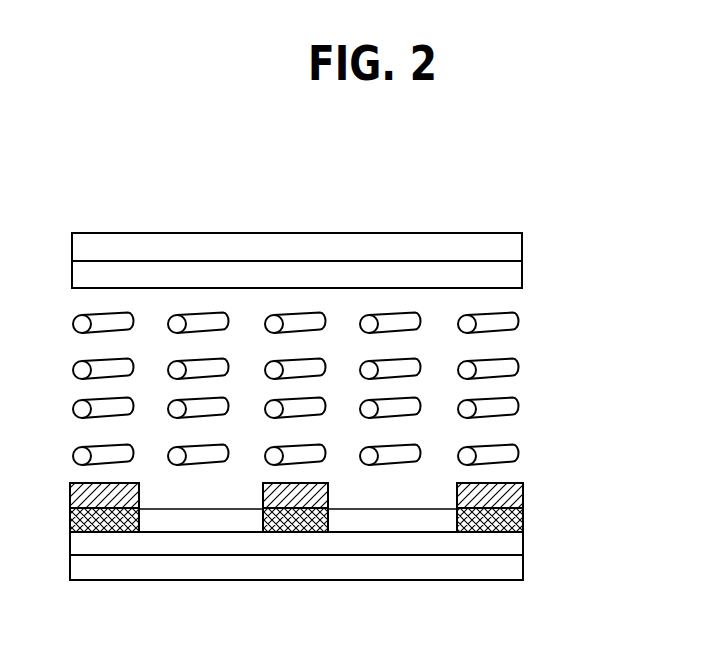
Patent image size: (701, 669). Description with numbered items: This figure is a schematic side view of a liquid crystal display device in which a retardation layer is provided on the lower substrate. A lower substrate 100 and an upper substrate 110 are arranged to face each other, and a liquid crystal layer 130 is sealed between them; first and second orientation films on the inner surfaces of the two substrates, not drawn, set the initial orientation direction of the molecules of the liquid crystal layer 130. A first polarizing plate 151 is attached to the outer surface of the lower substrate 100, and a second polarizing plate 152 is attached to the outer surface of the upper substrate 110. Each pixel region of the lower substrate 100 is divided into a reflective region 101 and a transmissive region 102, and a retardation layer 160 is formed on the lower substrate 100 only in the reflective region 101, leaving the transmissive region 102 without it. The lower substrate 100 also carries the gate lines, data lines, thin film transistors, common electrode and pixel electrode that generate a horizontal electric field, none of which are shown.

The second polarizing plate 152 is at (522, 246).
The upper substrate 110 is at (522, 275).
The liquid crystal layer 130 is at (512, 385).
The retardation layer 160 is at (517, 494).
The reflective region 101 is at (517, 521).
The transmissive region 102 is at (394, 521).
The lower substrate 100 is at (517, 546).
The first polarizing plate 151 is at (517, 570).